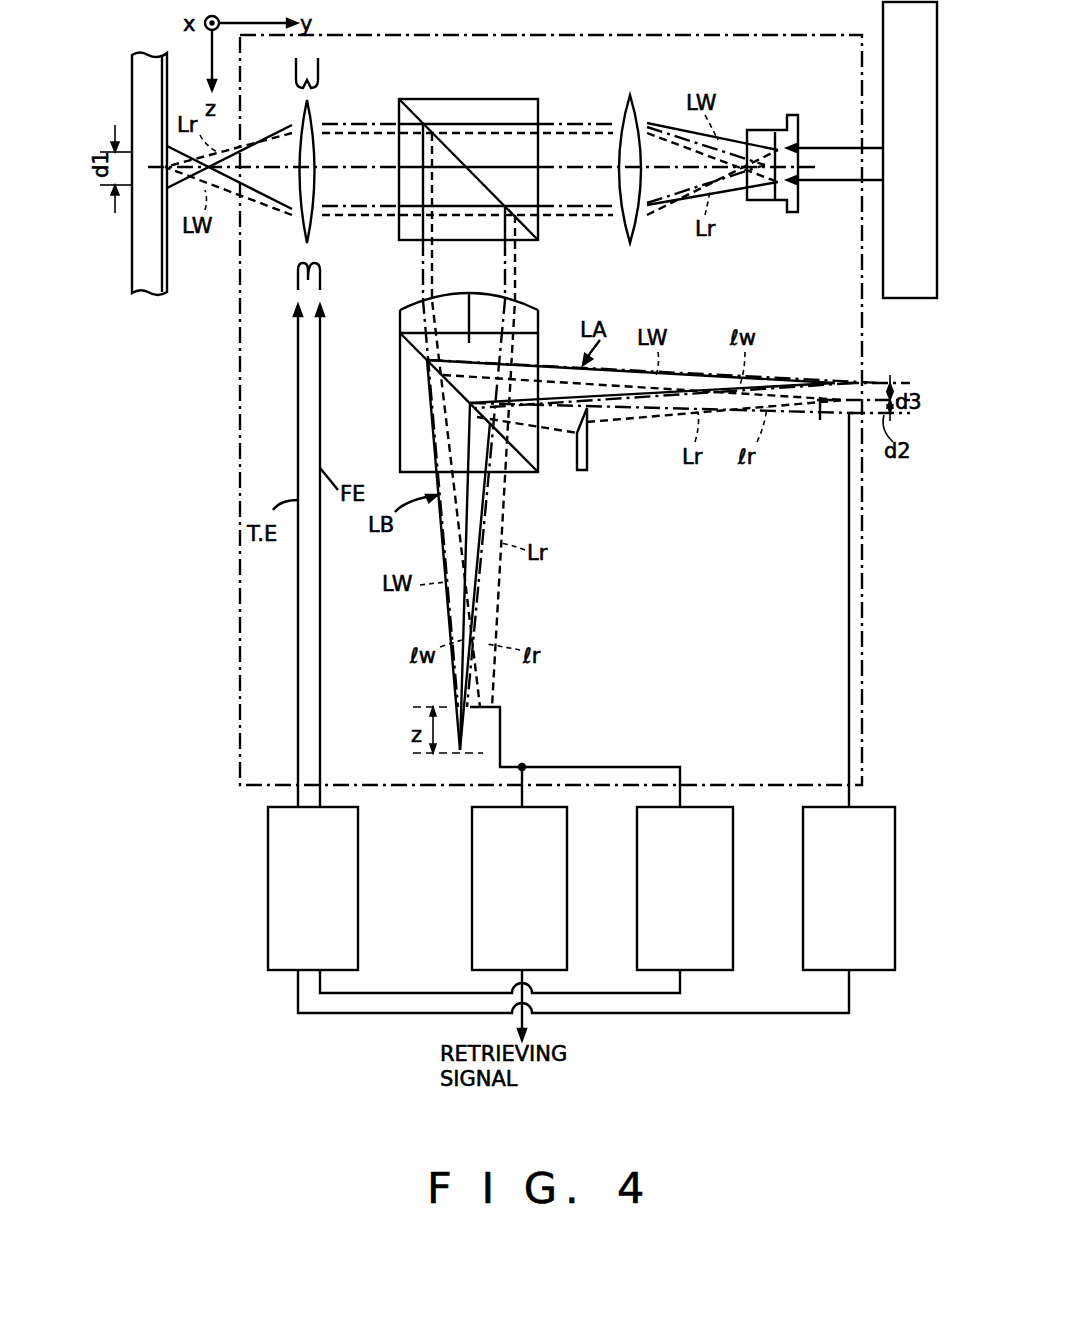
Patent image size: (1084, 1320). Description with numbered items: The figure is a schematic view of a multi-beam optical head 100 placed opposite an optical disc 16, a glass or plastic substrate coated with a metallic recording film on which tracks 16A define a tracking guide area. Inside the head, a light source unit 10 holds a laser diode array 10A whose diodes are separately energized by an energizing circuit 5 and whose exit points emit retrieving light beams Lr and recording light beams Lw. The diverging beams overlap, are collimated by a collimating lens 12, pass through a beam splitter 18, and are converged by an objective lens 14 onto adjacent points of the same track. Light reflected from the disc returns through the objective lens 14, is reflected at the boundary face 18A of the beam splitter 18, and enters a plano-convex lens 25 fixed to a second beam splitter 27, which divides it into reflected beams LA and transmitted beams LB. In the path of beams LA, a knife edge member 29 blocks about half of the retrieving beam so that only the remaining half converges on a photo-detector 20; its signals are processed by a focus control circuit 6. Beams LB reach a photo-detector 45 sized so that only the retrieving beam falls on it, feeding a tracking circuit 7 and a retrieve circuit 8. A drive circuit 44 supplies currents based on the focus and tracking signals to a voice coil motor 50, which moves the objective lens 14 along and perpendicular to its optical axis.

The energizing circuit 5 is at (883, 16).
The focus control circuit 6 is at (803, 857).
The tracking circuit 7 is at (637, 857).
The retrieve circuit 8 is at (472, 857).
The light source unit 10 is at (806, 120).
The laser diode array 10A is at (775, 146).
The collimating lens 12 is at (641, 110).
The objective lens 14 is at (322, 112).
The optical disc 16 is at (148, 304).
The tracks 16A is at (167, 265).
The beam splitter 18 is at (503, 99).
The boundary face 18A is at (538, 234).
The photo-detector 20 is at (826, 425).
The plano-convex lens 25 is at (538, 310).
The beam splitter 27 is at (400, 366).
The knife edge member 29 is at (587, 455).
The drive circuit 44 is at (268, 857).
The photo-detector 45 is at (505, 707).
The voice coil motor 50 is at (298, 279).
The multi-beam optical head 100 is at (239, 613).